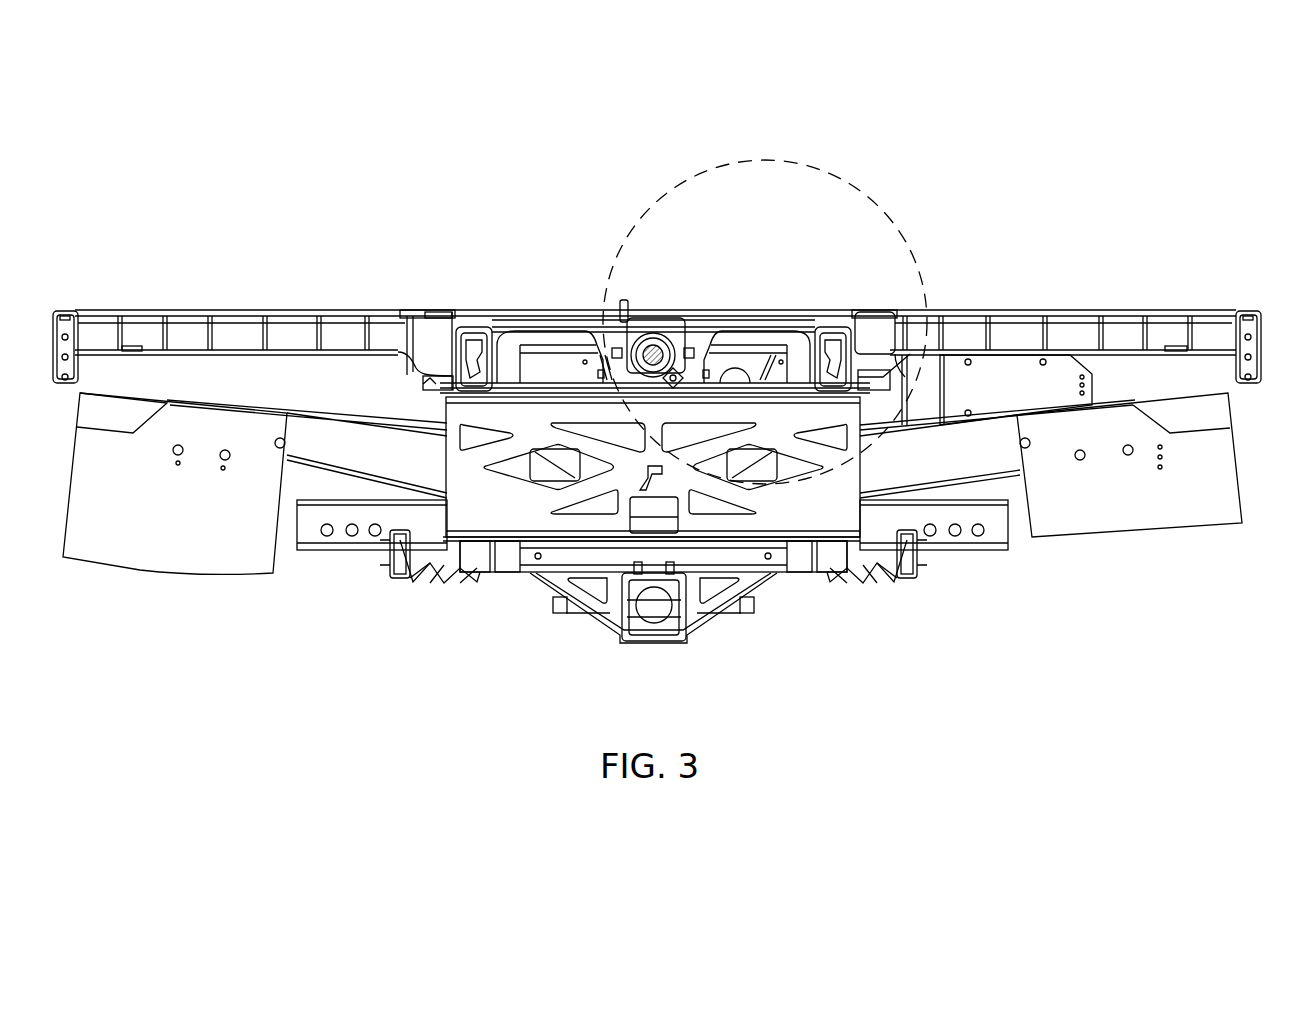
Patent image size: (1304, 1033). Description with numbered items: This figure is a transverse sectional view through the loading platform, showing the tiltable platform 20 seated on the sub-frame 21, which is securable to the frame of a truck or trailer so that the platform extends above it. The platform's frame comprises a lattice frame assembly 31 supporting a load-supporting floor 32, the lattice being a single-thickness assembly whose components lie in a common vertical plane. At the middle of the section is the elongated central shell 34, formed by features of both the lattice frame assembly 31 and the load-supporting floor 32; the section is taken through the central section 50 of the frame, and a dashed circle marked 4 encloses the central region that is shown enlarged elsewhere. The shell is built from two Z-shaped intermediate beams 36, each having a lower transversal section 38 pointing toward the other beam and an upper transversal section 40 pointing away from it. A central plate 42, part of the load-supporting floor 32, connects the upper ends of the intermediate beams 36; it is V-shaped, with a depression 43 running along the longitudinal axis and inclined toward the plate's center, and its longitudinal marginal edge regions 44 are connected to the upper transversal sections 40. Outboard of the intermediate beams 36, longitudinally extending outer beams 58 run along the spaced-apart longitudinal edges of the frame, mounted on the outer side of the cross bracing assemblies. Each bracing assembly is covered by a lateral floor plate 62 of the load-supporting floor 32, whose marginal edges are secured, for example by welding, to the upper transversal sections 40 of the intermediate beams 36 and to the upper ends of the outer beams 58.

The detail view region 4 is at (661, 197).
The tiltable platform 20 is at (1087, 176).
The sub-frame 21 is at (914, 592).
The lattice frame assembly 31 is at (1218, 381).
The load-supporting floor 32 is at (1014, 300).
The elongated central shell 34 is at (803, 300).
The intermediate beams 36 is at (459, 329).
The lower transversal section 38 is at (447, 408).
The upper transversal section 40 is at (432, 312).
The central plate 42 is at (727, 320).
The depression 43 is at (656, 306).
The longitudinal marginal edge regions 44 is at (450, 311).
The central section 50 is at (1222, 294).
The longitudinally extending outer beams 58 is at (65, 311).
The lateral floor plate 62 is at (240, 310).